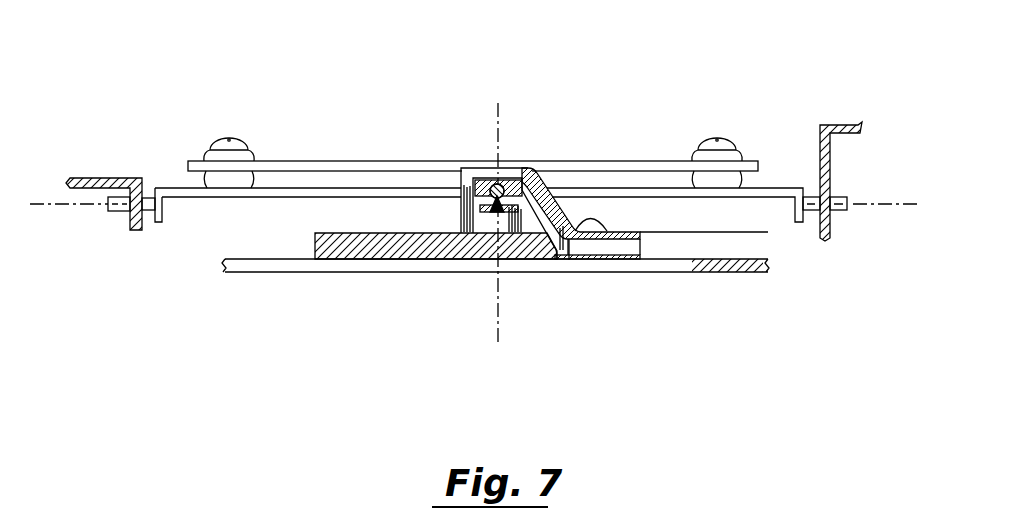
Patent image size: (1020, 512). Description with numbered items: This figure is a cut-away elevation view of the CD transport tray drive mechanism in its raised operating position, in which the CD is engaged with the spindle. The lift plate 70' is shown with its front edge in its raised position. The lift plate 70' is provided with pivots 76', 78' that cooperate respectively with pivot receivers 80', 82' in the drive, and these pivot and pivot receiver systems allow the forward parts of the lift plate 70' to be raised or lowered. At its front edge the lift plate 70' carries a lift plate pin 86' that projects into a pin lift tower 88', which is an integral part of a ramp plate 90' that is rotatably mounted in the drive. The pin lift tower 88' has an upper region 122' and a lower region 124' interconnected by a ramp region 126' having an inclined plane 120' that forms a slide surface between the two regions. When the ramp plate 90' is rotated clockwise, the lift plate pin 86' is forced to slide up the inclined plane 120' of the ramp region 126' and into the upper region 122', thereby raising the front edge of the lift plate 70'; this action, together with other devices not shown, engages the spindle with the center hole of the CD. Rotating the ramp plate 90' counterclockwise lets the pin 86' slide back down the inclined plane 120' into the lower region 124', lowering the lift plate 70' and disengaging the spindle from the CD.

The lift plate 70' is at (479, 149).
The pivot 76' is at (118, 253).
The pivot 78' is at (875, 179).
The pivot receiver 80' is at (104, 153).
The pivot receiver 82' is at (846, 252).
The lift plate pin 86' is at (515, 162).
The pin lift tower 88' is at (639, 290).
The ramp plate 90' is at (423, 300).
The inclined plane 120' is at (624, 162).
The upper region 122' is at (529, 291).
The lower region 124' is at (661, 291).
The ramp region 126' is at (605, 152).